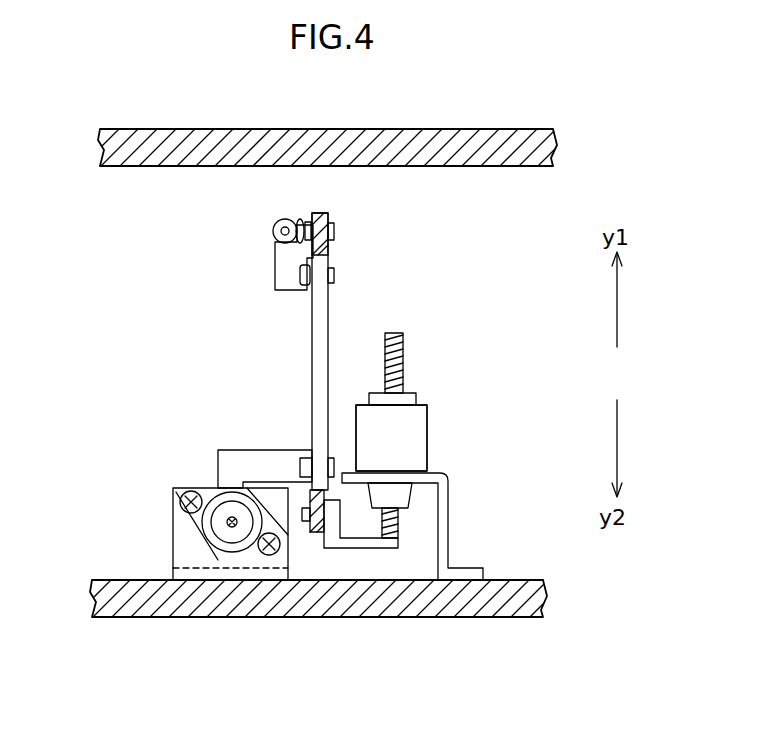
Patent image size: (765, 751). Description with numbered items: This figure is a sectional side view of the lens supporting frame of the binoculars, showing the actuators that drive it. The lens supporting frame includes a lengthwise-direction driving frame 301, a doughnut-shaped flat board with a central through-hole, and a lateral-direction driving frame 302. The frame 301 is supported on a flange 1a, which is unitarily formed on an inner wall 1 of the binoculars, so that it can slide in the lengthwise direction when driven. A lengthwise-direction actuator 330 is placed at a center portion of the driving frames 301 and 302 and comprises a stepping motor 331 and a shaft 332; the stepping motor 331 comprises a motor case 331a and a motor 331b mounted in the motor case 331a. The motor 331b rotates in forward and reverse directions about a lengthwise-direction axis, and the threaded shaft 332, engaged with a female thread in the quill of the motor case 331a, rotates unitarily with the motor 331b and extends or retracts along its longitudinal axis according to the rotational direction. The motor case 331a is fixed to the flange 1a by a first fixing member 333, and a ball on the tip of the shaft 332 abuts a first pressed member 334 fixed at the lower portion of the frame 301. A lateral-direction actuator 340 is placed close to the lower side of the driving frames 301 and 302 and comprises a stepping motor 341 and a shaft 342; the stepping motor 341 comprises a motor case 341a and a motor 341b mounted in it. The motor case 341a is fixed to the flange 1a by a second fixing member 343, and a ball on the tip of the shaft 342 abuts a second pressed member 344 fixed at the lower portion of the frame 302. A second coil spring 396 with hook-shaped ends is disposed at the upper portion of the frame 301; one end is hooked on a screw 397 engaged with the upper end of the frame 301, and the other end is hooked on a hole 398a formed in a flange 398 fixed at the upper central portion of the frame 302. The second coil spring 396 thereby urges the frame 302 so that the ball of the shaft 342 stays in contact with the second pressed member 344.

The inner wall 1 is at (410, 128).
The flange 1a is at (463, 167).
The lengthwise-direction driving frame 301 is at (331, 240).
The lateral-direction driving frame 302 is at (320, 302).
The lengthwise-direction actuator 330 is at (452, 478).
The stepping motor 331 is at (437, 448).
The motor case 331a is at (427, 420).
The motor 331b is at (412, 399).
The shaft 332 is at (403, 355).
The first fixing member 333 is at (448, 520).
The first pressed member 334 is at (386, 548).
The lateral-direction actuator 340 is at (187, 539).
The stepping motor 341 is at (196, 584).
The motor case 341a is at (232, 582).
The motor 341b is at (193, 581).
The shaft 342 is at (228, 515).
The second fixing member 343 is at (185, 540).
The second pressed member 344 is at (258, 466).
The second coil spring 396 is at (274, 228).
The screw 397 is at (299, 220).
The flange 398 is at (290, 273).
The hole 398a is at (282, 240).